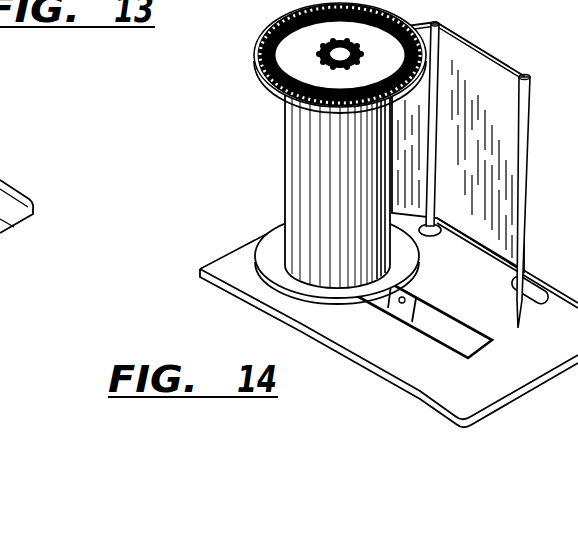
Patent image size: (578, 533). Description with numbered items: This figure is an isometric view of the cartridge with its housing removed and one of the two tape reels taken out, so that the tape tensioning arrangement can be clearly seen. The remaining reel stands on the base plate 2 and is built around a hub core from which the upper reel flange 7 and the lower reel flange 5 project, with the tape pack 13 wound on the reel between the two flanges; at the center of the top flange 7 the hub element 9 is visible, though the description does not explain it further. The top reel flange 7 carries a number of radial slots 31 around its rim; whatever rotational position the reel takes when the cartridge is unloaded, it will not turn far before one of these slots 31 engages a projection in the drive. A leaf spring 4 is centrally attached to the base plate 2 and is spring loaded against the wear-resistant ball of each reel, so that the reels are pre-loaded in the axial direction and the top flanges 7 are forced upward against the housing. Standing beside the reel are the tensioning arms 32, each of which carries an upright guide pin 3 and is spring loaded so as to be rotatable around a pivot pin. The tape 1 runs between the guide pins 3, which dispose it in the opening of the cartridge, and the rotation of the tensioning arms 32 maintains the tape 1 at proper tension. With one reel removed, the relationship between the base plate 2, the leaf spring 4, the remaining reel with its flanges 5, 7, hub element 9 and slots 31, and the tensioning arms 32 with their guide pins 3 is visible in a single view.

In FIG. 14, the tape 1 is at (470, 74).
In FIG. 13, the base plate 2 is at (0, 240).
In FIG. 14, the base plate 2 is at (528, 347).
In FIG. 14, the guide pin 3 is at (436, 23).
In FIG. 14, the leaf spring 4 is at (440, 320).
In FIG. 14, the lower reel flange 5 is at (268, 253).
In FIG. 13, the upper reel flange 7 is at (248, 12).
In FIG. 14, the upper reel flange 7 is at (316, 61).
In FIG. 14, the hub 9 is at (330, 48).
In FIG. 14, the tape pack 13 is at (285, 187).
In FIG. 13, the radial slots 31 is at (170, 0).
In FIG. 14, the radial slots 31 is at (258, 43).
In FIG. 14, the tension arm 32 is at (418, 226).